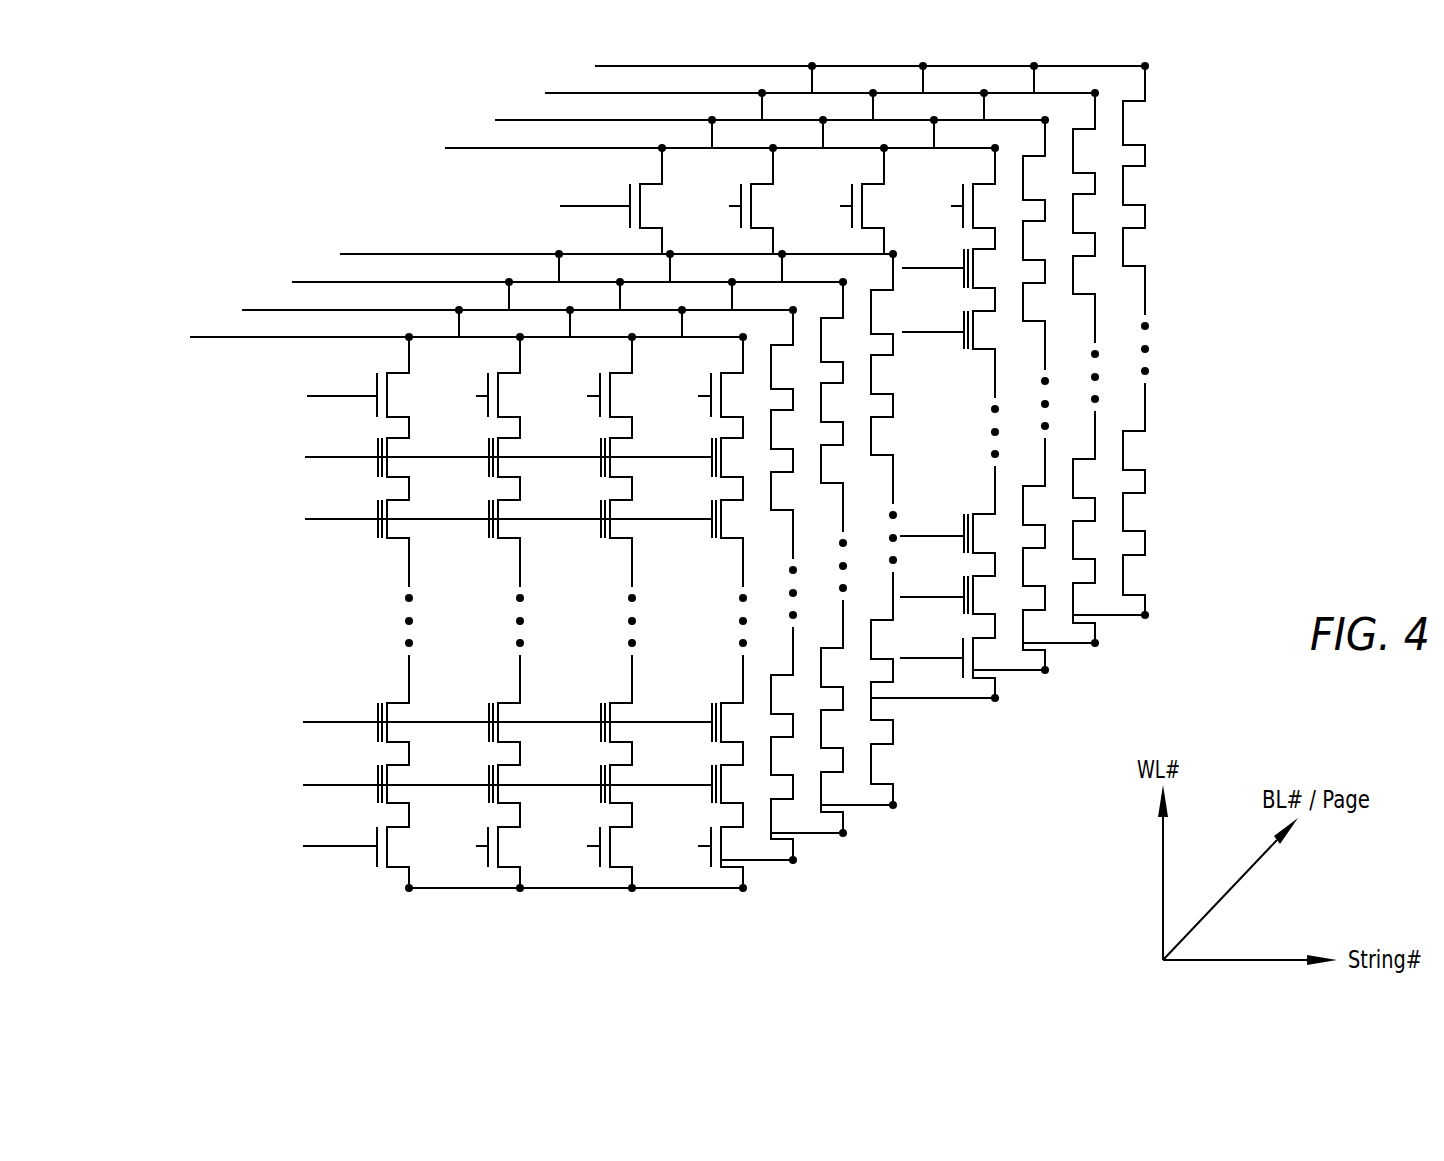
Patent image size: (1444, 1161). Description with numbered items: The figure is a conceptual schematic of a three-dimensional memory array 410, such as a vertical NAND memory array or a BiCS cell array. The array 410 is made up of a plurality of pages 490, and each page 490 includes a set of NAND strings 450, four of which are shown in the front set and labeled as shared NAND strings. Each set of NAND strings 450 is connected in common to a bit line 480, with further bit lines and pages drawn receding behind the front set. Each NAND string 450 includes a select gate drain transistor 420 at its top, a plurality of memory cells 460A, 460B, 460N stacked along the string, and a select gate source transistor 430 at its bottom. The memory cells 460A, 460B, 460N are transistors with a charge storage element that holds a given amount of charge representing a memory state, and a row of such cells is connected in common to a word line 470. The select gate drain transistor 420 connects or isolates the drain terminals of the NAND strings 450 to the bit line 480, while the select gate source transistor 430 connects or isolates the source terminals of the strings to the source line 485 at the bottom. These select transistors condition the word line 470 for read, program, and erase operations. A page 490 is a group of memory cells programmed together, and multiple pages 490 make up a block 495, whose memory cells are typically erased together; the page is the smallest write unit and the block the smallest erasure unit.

The three-dimensional memory array 410 is at (195, 178).
The select gate drain transistor 420 is at (268, 408).
The select gate source transistor 430 is at (235, 846).
The NAND strings 450 is at (747, 913).
The memory cell 460A is at (378, 776).
The memory cell 460B is at (378, 713).
The memory cell 460N is at (378, 465).
The word line 470 is at (235, 783).
The bit line 480 is at (232, 337).
The source line 485 is at (665, 890).
The page 490 is at (802, 613).
The block 495 is at (748, 908).